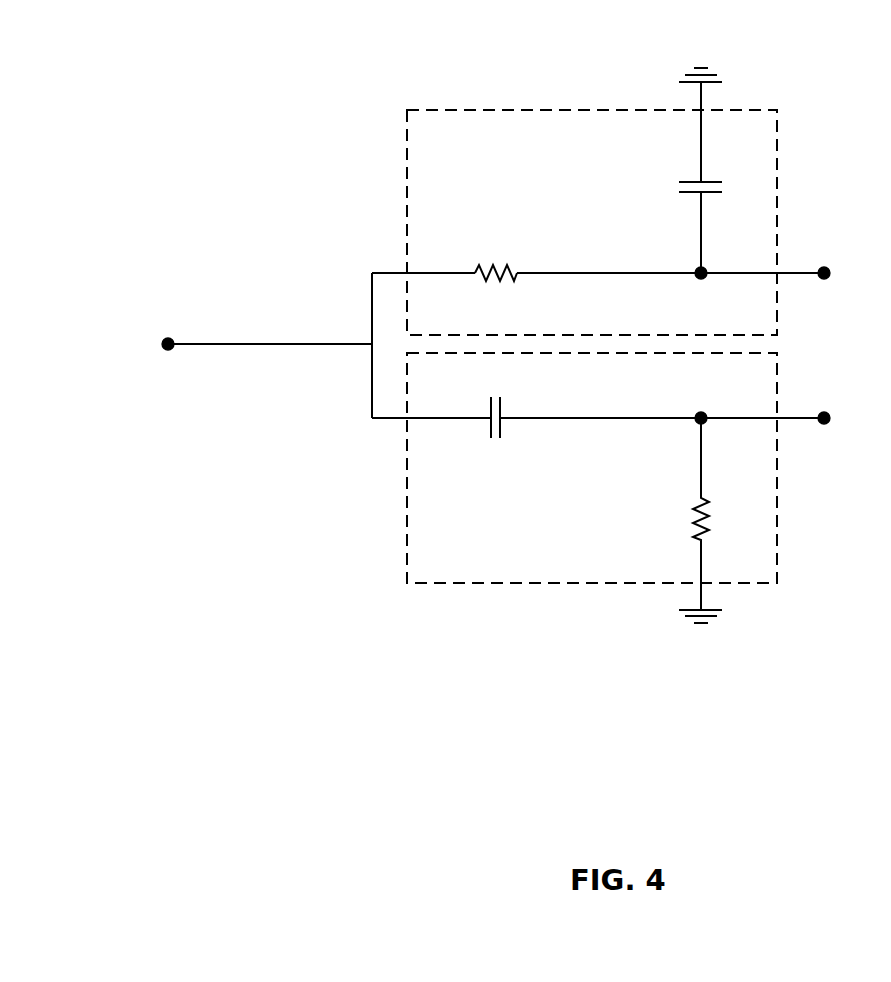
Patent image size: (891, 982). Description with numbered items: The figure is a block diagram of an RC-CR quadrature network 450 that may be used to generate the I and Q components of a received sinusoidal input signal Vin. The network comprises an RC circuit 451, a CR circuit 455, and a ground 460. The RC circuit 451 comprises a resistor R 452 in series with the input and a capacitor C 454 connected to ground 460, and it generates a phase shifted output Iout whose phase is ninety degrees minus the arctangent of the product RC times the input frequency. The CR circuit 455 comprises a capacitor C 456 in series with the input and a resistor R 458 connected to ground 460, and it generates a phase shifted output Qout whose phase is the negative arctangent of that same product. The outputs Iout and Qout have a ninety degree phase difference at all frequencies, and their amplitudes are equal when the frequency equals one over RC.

The RC-CR quadrature network 450 is at (302, 103).
The RC circuit 451 is at (532, 110).
The resistor R 452 is at (514, 273).
The capacitor C 454 is at (712, 182).
The CR circuit 455 is at (530, 583).
The capacitor C 456 is at (500, 397).
The resistor R 458 is at (702, 495).
The ground 460 is at (705, 67).